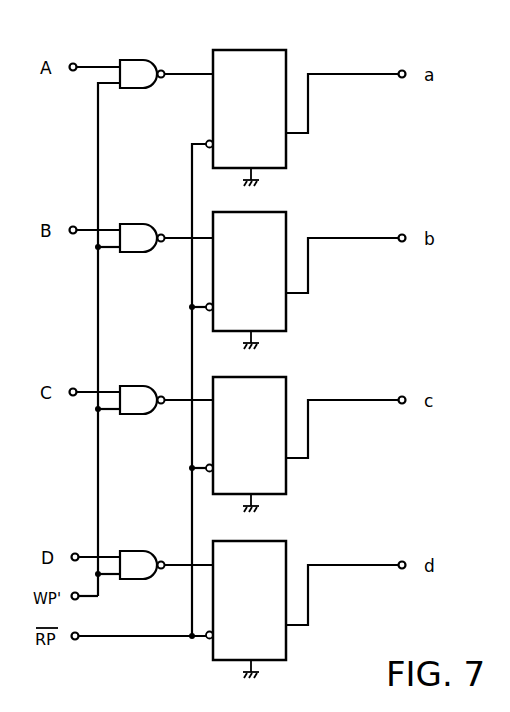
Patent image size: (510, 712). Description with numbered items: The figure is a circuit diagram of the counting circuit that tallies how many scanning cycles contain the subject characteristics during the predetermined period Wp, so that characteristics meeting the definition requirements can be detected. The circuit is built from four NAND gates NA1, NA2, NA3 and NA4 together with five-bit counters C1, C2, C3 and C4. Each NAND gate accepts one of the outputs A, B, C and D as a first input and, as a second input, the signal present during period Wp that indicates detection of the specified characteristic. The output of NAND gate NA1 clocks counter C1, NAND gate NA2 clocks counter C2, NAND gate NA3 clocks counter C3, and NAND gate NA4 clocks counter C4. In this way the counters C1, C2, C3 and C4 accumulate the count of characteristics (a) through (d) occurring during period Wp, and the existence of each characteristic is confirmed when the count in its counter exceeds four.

The NAND gate NA1 is at (145, 59).
The NAND gate NA2 is at (145, 223).
The NAND gate NA3 is at (145, 385).
The NAND gate NA4 is at (145, 550).
The 5-bit counter C1 is at (284, 50).
The 5-bit counter C2 is at (284, 212).
The 5-bit counter C3 is at (284, 377).
The 5-bit counter C4 is at (287, 541).